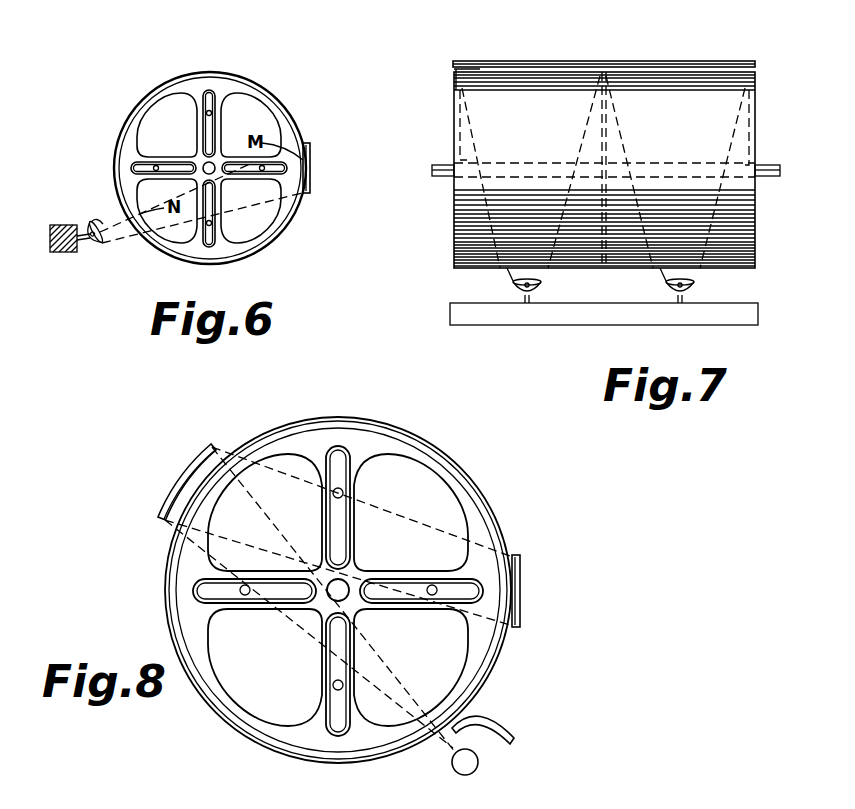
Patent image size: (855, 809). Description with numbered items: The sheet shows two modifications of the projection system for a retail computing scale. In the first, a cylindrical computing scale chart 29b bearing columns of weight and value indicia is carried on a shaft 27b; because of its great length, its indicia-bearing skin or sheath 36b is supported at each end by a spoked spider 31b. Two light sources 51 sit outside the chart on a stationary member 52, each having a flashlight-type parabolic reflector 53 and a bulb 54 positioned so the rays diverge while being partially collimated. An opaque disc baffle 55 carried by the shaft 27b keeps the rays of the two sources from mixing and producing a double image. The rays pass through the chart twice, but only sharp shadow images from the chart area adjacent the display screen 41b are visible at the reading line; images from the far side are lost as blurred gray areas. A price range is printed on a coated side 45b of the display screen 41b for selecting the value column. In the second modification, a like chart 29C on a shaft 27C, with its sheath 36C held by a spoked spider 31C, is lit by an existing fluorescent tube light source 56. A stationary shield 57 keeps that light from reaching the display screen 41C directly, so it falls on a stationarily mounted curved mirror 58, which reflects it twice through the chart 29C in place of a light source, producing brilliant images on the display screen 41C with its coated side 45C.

In FIG. 6, the shaft 27b is at (204, 164).
In FIG. 7, the shaft 27b is at (448, 168).
In FIG. 6, the cylindrical computing scale chart 29b is at (292, 103).
In FIG. 7, the cylindrical computing scale chart 29b is at (470, 277).
In FIG. 6, the spoked spider 31b is at (216, 144).
In FIG. 7, the spoked spider 31b is at (750, 105).
In FIG. 6, the indicia-bearing skin or sheath 36b is at (278, 238).
In FIG. 7, the indicia-bearing skin or sheath 36b is at (525, 130).
In FIG. 6, the display screen 41b is at (325, 173).
In FIG. 7, the display screen 41b is at (623, 58).
In FIG. 6, the coated side of display screen 45b is at (308, 146).
In FIG. 7, the coated side of display screen 45b is at (480, 71).
In FIG. 6, the light source 51 is at (73, 210).
In FIG. 7, the light source 51 is at (540, 298).
In FIG. 6, the stationary member 52 is at (66, 252).
In FIG. 7, the stationary member 52 is at (673, 323).
In FIG. 6, the parabolic reflector 53 is at (100, 239).
In FIG. 7, the parabolic reflector 53 is at (513, 288).
In FIG. 6, the bulb 54 is at (99, 225).
In FIG. 7, the bulb 54 is at (537, 283).
In FIG. 7, the opaque disc baffle 55 is at (607, 150).
In FIG. 8, the light source 56 is at (478, 765).
In FIG. 8, the stationary shield 57 is at (507, 727).
In FIG. 8, the curved mirror 58 is at (182, 482).
In FIG. 8, the shaft 27C is at (333, 599).
In FIG. 8, the cylindrical computing scale chart 29C is at (396, 418).
In FIG. 8, the spoked spider 31C is at (352, 556).
In FIG. 8, the indicia-bearing skin or sheath 36C is at (432, 446).
In FIG. 8, the display screen 41C is at (530, 585).
In FIG. 8, the coated side of display screen 45C is at (513, 558).